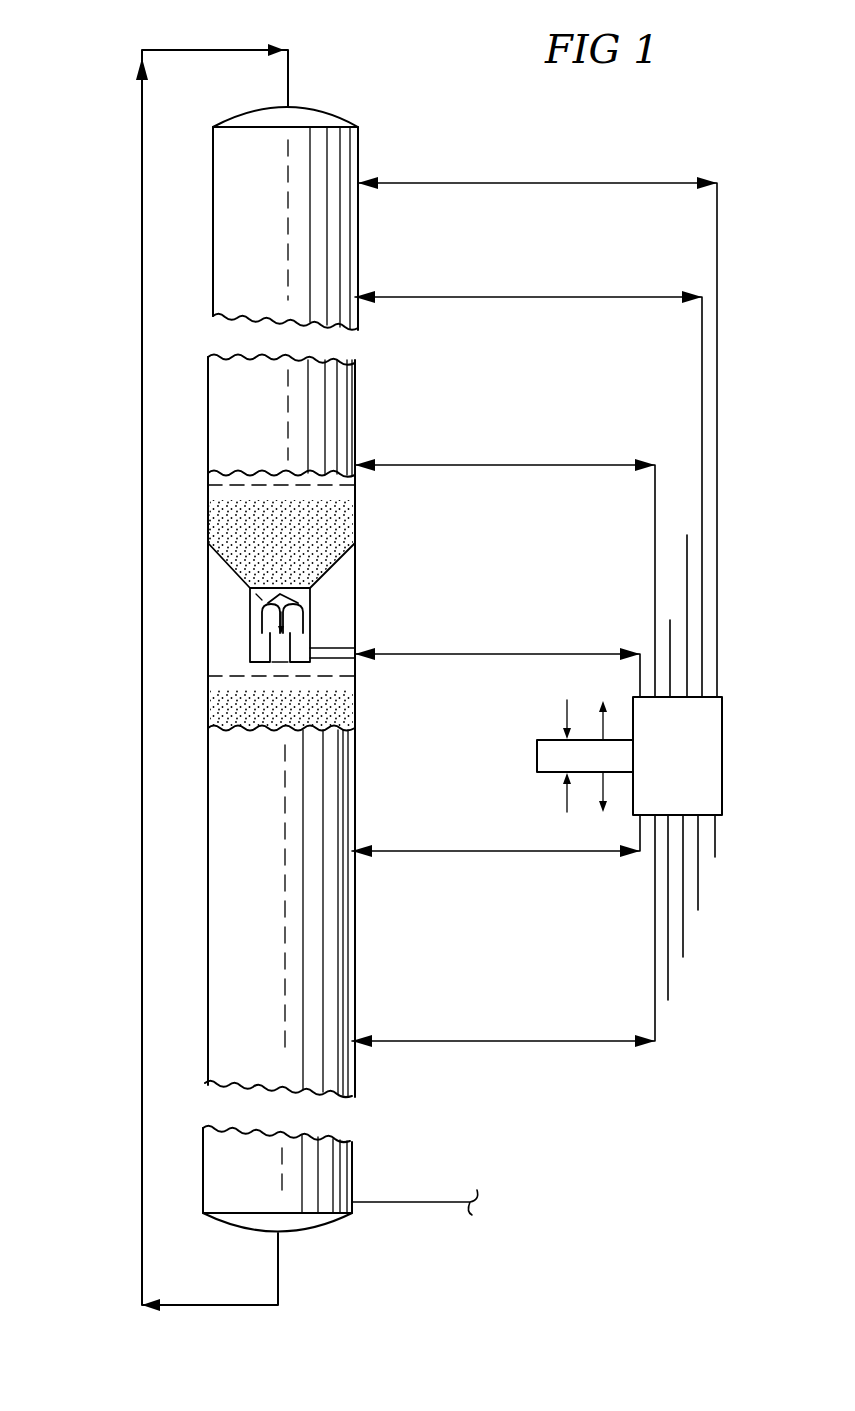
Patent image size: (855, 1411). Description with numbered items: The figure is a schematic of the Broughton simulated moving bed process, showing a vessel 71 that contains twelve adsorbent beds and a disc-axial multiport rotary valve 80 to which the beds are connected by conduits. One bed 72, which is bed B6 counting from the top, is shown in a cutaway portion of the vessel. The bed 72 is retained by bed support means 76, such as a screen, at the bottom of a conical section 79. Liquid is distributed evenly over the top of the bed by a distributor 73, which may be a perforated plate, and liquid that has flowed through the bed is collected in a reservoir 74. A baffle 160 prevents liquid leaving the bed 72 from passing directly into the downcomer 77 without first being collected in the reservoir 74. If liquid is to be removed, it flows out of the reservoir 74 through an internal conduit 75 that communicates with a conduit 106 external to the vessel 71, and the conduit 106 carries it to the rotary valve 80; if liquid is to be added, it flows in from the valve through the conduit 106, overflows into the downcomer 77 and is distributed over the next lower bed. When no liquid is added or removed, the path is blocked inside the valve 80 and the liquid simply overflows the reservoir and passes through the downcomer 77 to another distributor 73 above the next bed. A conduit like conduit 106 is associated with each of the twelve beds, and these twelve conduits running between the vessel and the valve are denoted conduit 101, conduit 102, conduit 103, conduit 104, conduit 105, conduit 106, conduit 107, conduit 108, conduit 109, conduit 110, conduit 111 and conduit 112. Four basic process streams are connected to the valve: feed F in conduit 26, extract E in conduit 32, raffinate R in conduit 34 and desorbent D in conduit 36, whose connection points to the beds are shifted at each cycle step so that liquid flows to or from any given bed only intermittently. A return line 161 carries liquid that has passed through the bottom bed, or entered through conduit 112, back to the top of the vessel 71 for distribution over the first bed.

The return line 161 is at (236, 50).
The vessel 71 is at (238, 114).
The distributor 73 is at (230, 483).
The bed 72 is at (250, 534).
The conical section 79 is at (232, 570).
The bed support means 76 is at (262, 597).
The baffle 160 is at (298, 603).
The reservoir 74 is at (258, 633).
The internal conduit 75 is at (332, 646).
The downcomer 77 is at (278, 650).
The conduit 101 is at (577, 186).
The conduit 102 is at (562, 300).
The conduit 103 is at (696, 531).
The conduit 104 is at (678, 612).
The conduit 105 is at (560, 470).
The conduit 106 is at (535, 657).
The conduit 107 is at (482, 857).
The conduit 108 is at (448, 1040).
The conduit 109 is at (678, 996).
The conduit 110 is at (693, 953).
The conduit 111 is at (708, 906).
The conduit 112 is at (725, 853).
The rotary valve 80 is at (722, 745).
The feed conduit 26 is at (562, 720).
The extract conduit 32 is at (600, 724).
The desorbent conduit 36 is at (565, 782).
The raffinate conduit 34 is at (600, 797).